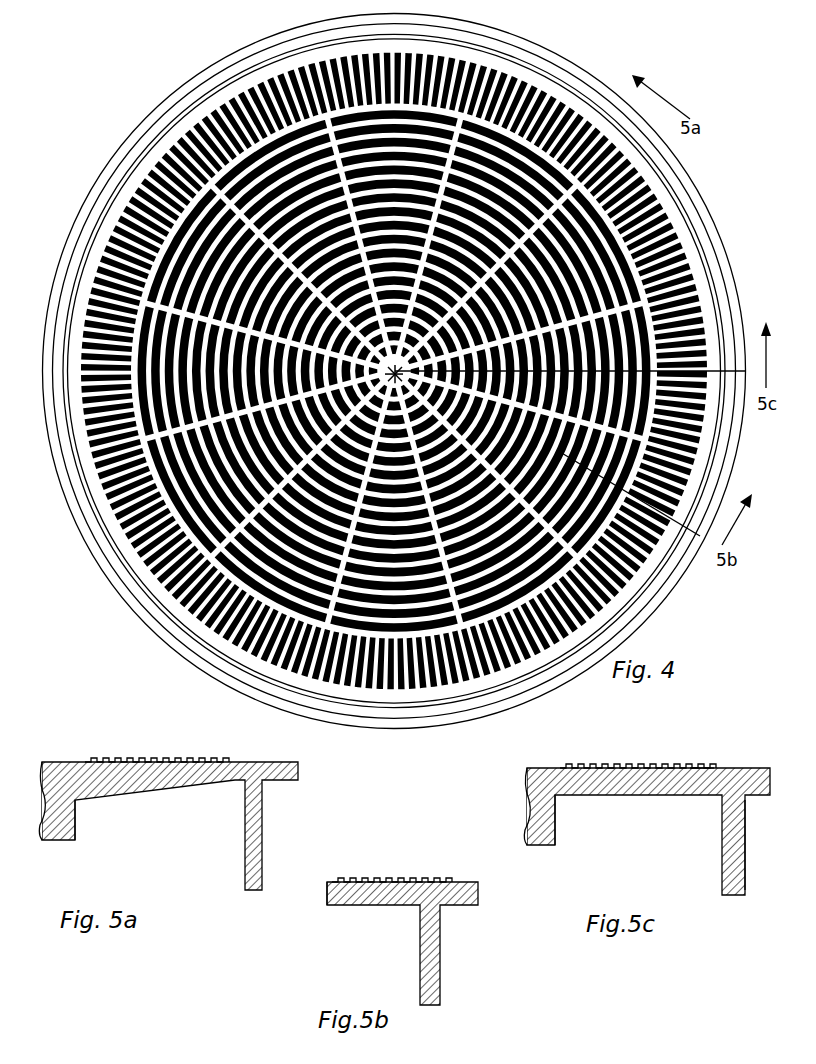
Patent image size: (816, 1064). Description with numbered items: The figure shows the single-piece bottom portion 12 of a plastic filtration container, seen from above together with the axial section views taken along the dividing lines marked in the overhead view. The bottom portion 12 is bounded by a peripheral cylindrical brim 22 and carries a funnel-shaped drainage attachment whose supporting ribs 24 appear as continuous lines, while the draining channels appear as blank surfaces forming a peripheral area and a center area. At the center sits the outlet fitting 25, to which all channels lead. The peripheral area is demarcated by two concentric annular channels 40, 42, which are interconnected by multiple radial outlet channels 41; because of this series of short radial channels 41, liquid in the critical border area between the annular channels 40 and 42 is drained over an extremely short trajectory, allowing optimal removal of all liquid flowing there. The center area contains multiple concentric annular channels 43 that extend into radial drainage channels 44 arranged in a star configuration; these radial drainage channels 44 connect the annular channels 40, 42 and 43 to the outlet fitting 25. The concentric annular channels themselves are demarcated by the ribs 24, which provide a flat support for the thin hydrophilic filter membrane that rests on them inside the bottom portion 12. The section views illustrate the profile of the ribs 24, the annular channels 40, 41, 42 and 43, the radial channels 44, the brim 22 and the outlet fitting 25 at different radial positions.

In FIG. 4, the bottom portion 12 is at (147, 100).
In FIG. 4, the concentric annular channel 40 is at (668, 246).
In FIG. 5C, the concentric annular channel 40 is at (740, 766).
In FIG. 4, the radial outlet channel 41 is at (662, 262).
In FIG. 5B, the radial outlet channel 41 is at (424, 880).
In FIG. 4, the concentric annular channel 42 is at (656, 272).
In FIG. 5C, the concentric annular channel 42 is at (702, 766).
In FIG. 4, the concentric annular channel 43 is at (654, 288).
In FIG. 5B, the concentric annular channel 43 is at (360, 880).
In FIG. 4, the radial drainage channel 44 is at (662, 316).
In FIG. 5A, the radial drainage channel 44 is at (128, 758).
In FIG. 5C, the peripheral cylindrical brim 22 is at (746, 844).
In FIG. 5C, the supporting ribs 24 is at (636, 766).
In FIG. 5A, the outlet fitting 25 is at (78, 815).
In FIG. 5C, the outlet fitting 25 is at (558, 822).